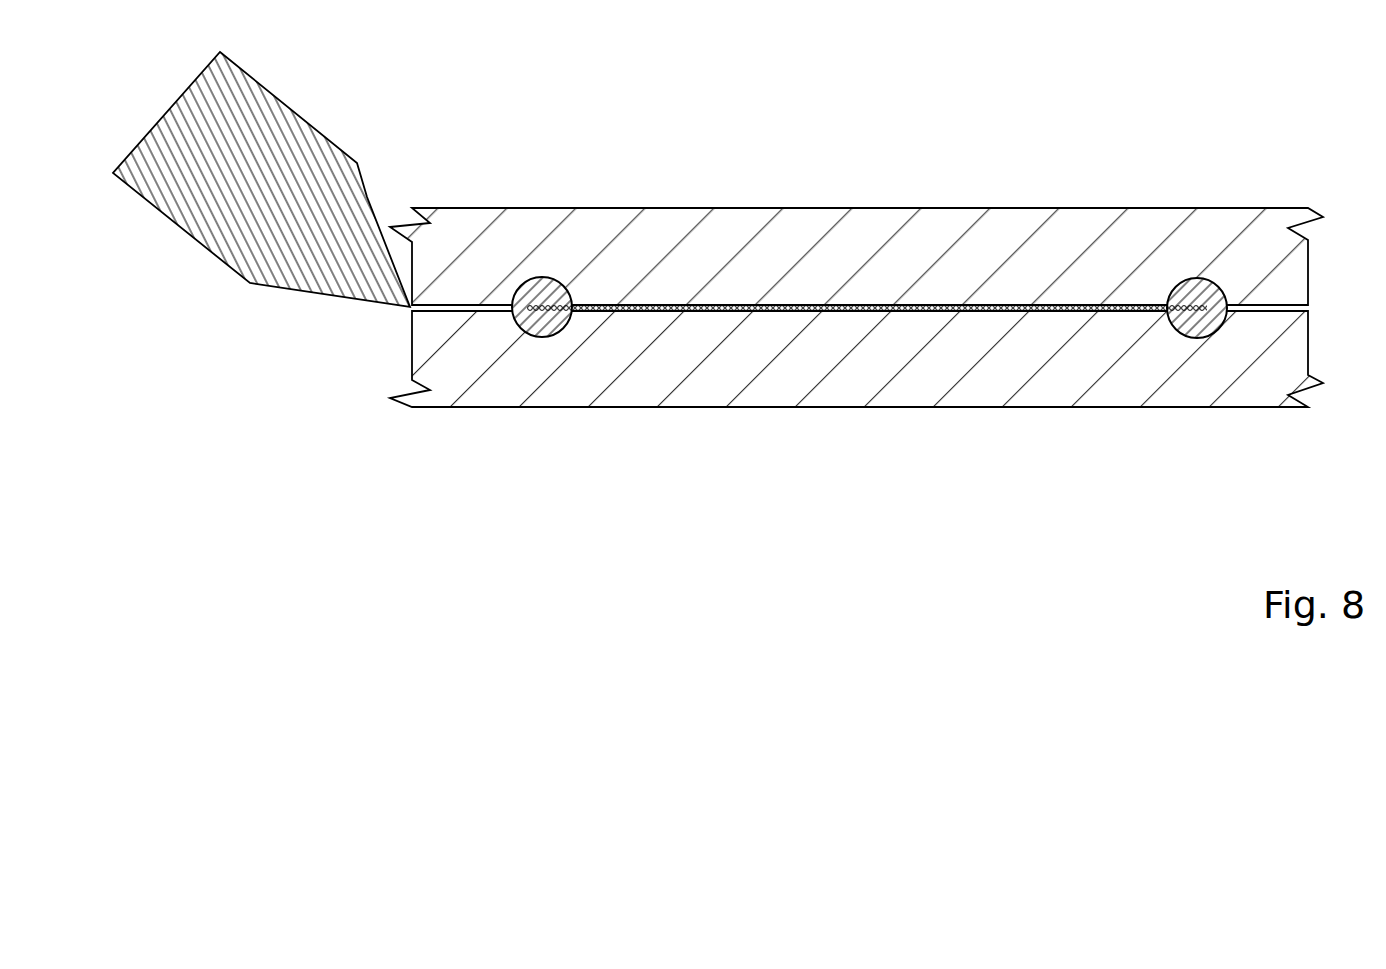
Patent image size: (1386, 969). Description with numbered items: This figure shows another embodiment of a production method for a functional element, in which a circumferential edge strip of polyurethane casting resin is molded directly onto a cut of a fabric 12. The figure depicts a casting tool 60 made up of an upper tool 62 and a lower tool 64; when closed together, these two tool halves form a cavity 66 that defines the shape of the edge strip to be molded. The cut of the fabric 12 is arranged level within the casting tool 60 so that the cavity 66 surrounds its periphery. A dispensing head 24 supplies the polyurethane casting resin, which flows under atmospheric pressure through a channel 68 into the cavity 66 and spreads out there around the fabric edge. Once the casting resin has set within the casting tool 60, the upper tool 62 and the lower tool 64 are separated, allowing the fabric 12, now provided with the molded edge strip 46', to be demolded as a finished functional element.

The dispensing head 24 is at (240, 113).
The casting tool 60 is at (856, 308).
The upper tool 62 is at (1067, 223).
The lower tool 64 is at (1045, 390).
The channel 68 is at (451, 309).
The edge strip 46' is at (877, 233).
The cavity 66 is at (540, 337).
The fabric 12 is at (775, 312).